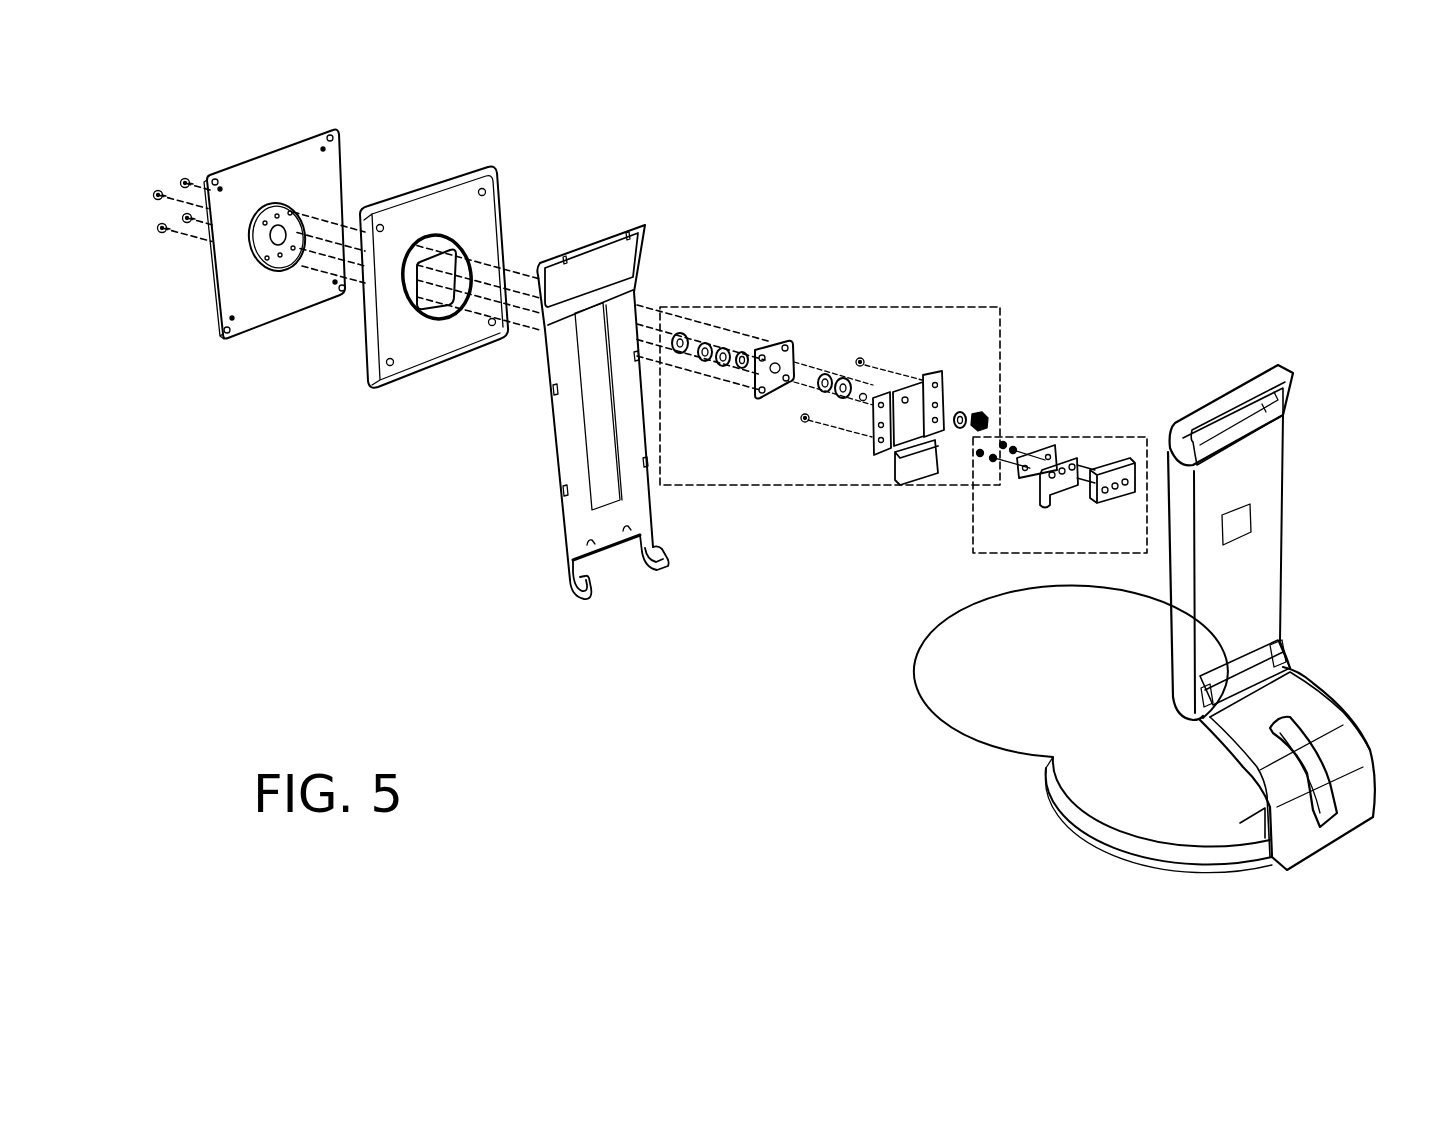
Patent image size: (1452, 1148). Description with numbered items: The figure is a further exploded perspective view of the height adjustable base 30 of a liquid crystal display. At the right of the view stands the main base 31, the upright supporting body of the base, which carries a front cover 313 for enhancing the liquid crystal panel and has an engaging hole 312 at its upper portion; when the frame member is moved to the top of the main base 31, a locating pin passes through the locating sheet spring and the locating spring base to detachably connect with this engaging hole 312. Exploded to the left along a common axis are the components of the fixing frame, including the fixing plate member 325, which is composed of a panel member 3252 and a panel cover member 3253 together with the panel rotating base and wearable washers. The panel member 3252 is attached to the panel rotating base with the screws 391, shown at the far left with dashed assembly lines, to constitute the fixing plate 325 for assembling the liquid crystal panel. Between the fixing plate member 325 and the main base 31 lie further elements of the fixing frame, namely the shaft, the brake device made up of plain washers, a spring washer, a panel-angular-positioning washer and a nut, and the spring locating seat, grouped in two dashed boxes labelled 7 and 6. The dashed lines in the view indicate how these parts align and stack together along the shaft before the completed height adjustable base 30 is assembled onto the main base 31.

The height adjustable base 30 is at (672, 794).
The main base 31 is at (1247, 602).
The engaging hole 312 is at (1237, 490).
The front cover 313 is at (580, 527).
The fixing plate member 325 is at (343, 400).
The panel member 3252 is at (275, 305).
The panel cover member 3253 is at (443, 338).
The screws 391 is at (183, 188).
The hinge assembly 7 is at (726, 472).
The bracket assembly 6 is at (1018, 542).